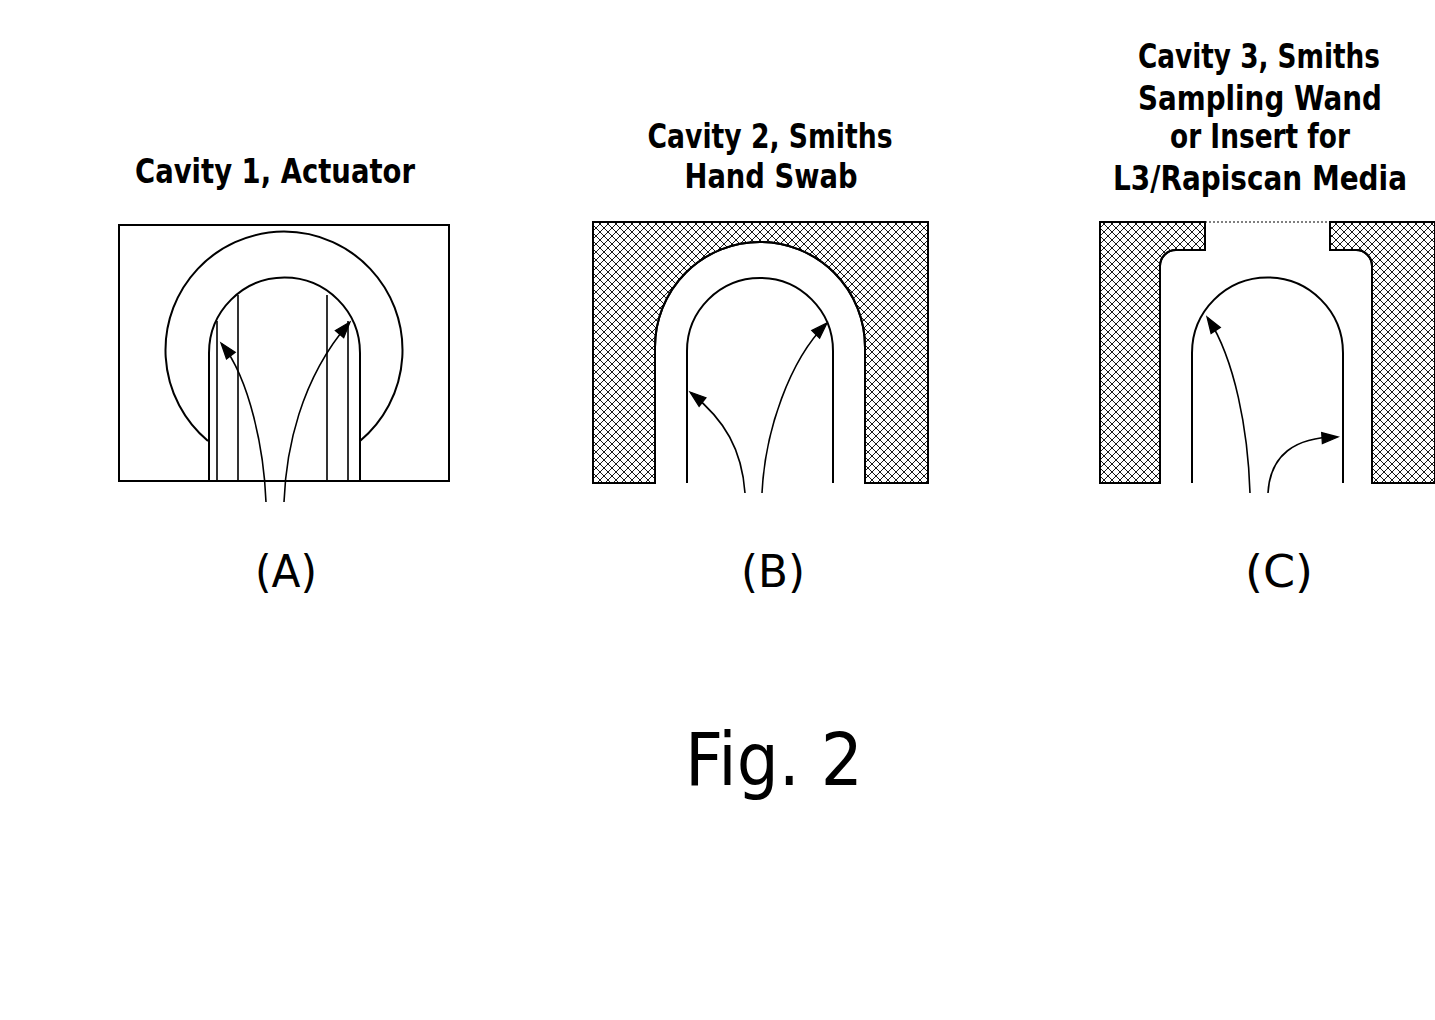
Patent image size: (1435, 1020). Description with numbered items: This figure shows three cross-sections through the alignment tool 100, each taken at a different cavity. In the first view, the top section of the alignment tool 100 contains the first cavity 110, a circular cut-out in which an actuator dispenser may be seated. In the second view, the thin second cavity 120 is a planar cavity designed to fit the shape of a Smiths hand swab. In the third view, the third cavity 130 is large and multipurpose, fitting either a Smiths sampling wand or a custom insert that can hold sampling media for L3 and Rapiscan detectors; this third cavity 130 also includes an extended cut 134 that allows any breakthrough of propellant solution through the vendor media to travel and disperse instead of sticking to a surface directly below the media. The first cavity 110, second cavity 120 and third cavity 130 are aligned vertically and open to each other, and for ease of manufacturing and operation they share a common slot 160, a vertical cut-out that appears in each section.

The alignment tool 100 is at (398, 463).
The first cavity 110 is at (363, 273).
The second cavity 120 is at (705, 258).
The third cavity 130 is at (1172, 268).
The extended cut 134 is at (1222, 232).
The common slot 160 is at (779, 427).